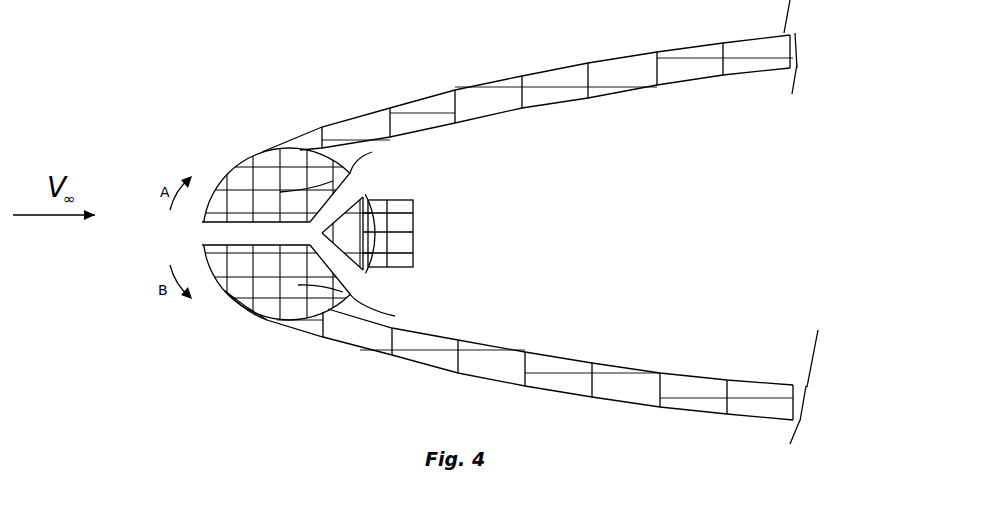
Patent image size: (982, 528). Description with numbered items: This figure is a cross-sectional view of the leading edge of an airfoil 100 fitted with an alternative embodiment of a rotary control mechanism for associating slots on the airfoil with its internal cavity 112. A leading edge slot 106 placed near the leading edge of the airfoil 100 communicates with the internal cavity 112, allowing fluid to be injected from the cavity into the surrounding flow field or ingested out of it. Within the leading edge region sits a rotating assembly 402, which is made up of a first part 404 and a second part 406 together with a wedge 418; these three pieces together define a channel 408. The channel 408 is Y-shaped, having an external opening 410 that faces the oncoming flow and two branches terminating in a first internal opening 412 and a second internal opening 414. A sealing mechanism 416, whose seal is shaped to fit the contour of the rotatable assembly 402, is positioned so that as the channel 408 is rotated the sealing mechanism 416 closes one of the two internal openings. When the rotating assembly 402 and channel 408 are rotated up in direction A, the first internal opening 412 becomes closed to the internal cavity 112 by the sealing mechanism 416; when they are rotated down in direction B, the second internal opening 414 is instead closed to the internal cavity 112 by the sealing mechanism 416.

The airfoil 100 is at (443, 78).
The leading edge slot 106 is at (260, 152).
The internal cavity 112 is at (667, 236).
The rotating assembly 402 is at (230, 302).
The first part 404 is at (372, 152).
The second part 406 is at (366, 284).
The channel 408 is at (273, 242).
The external opening 410 is at (200, 234).
The first internal opening 412 is at (363, 197).
The second internal opening 414 is at (342, 265).
The sealing mechanism 416 is at (395, 228).
The wedge 418 is at (367, 193).